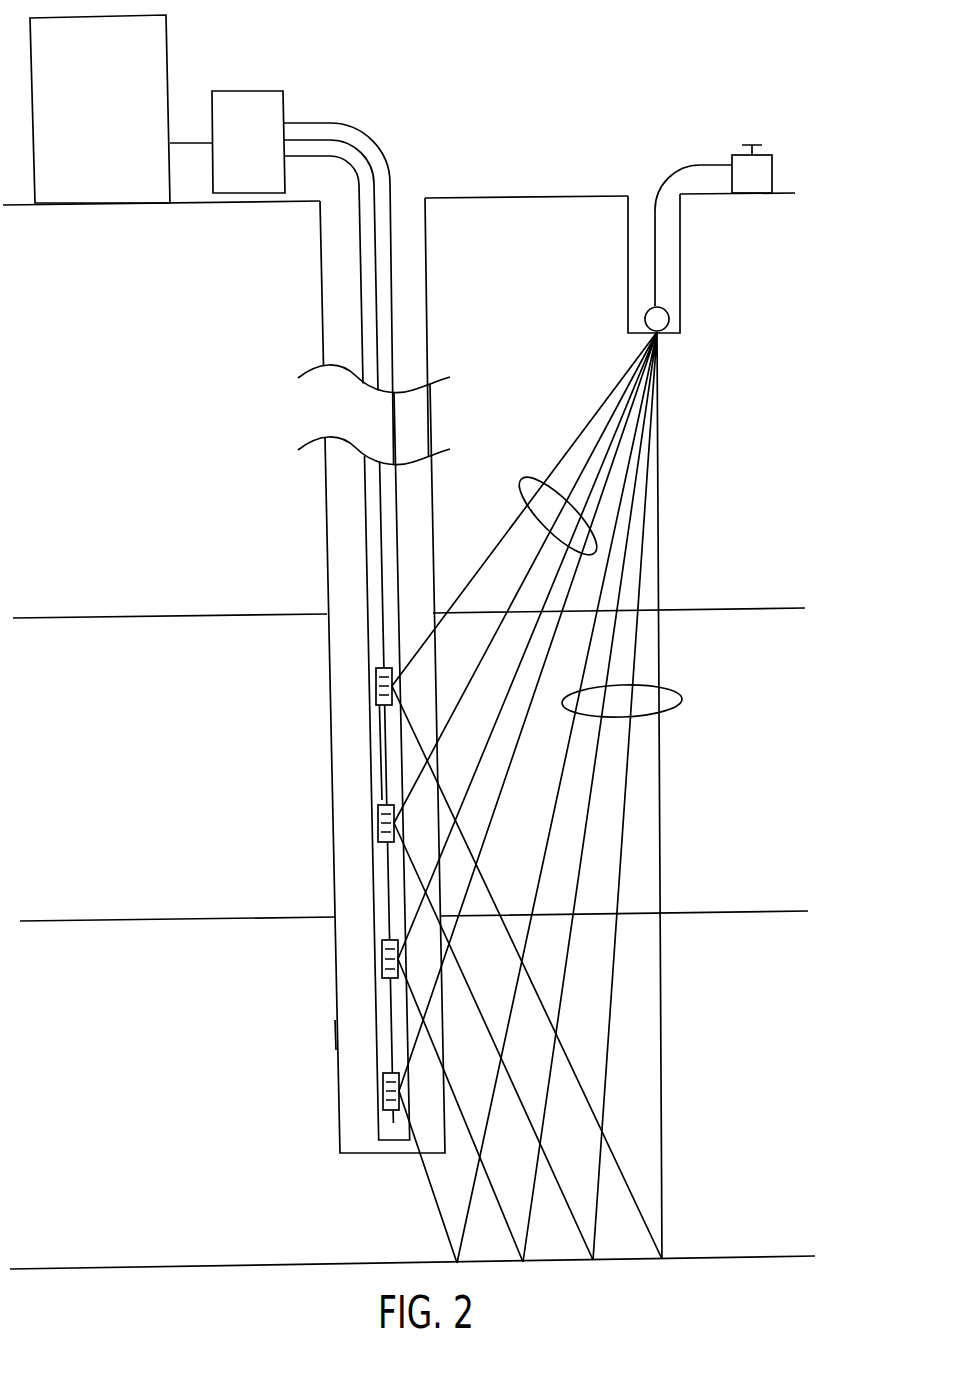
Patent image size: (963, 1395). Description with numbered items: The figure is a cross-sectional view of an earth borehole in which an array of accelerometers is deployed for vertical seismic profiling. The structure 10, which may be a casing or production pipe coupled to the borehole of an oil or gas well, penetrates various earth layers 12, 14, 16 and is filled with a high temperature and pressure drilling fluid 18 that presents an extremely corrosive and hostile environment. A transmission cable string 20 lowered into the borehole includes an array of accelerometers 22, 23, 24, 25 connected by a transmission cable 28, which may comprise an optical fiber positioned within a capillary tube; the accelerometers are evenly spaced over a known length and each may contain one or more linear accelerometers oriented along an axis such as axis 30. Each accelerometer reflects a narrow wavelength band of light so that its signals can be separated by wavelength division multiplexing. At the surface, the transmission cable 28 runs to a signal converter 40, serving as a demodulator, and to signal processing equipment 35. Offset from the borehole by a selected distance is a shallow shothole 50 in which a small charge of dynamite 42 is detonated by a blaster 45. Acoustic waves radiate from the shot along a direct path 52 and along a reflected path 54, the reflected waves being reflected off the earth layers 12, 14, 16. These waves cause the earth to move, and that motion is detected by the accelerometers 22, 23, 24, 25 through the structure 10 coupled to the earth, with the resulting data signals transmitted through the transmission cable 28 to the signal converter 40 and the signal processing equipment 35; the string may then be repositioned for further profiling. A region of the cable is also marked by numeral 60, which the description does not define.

The structure 10 is at (328, 537).
The earth layer 12 is at (108, 616).
The earth layer 14 is at (125, 920).
The earth layer 16 is at (175, 1265).
The drilling fluid 18 is at (352, 1036).
The transmission cable string 20 is at (422, 98).
The accelerometer 22 is at (376, 684).
The accelerometer 23 is at (378, 820).
The accelerometer 24 is at (382, 948).
The accelerometer 25 is at (385, 1103).
The transmission cable 28 is at (380, 557).
The axis 30 is at (368, 644).
The signal processing equipment 35 is at (121, 109).
The signal converter 40 is at (248, 142).
The charge of dynamite 42 is at (671, 306).
The blaster 45 is at (773, 168).
The shothole 50 is at (676, 257).
The direct path 52 is at (538, 478).
The reflected path 54 is at (680, 693).
The cable segment 60 is at (378, 757).